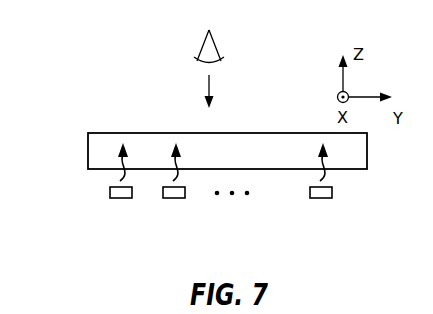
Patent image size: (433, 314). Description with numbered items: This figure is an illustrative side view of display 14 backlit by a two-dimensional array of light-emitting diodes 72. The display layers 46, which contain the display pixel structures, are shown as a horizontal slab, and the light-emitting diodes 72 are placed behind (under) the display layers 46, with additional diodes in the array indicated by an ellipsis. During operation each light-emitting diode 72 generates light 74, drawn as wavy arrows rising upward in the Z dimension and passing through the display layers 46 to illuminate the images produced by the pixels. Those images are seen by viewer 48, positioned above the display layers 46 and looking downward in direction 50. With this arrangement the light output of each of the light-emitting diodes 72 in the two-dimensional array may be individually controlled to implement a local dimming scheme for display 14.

The display 14 is at (105, 102).
The display layers 46 is at (88, 148).
The viewer 48 is at (218, 46).
The direction 50 is at (213, 91).
The light-emitting diodes 72 is at (118, 199).
The light 74 is at (166, 163).